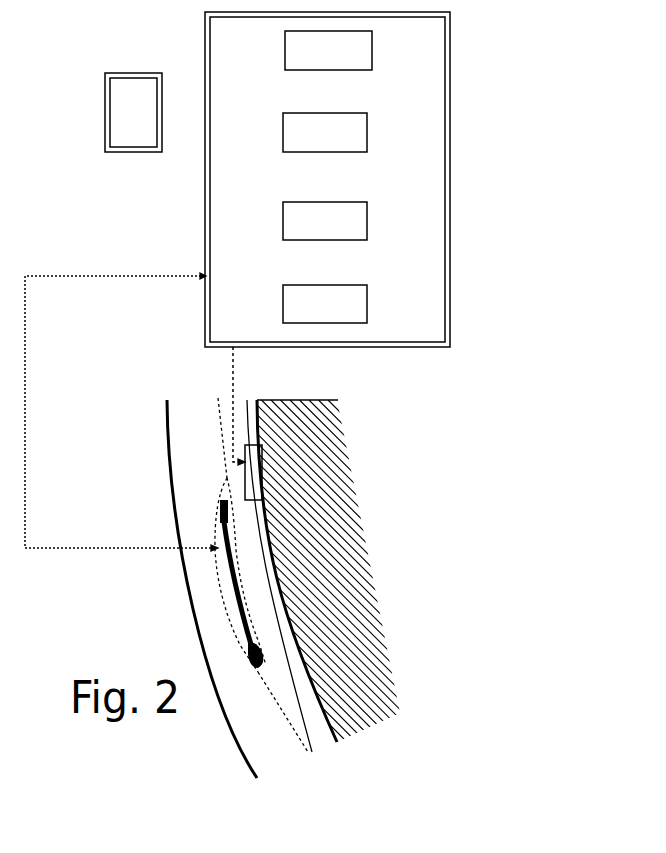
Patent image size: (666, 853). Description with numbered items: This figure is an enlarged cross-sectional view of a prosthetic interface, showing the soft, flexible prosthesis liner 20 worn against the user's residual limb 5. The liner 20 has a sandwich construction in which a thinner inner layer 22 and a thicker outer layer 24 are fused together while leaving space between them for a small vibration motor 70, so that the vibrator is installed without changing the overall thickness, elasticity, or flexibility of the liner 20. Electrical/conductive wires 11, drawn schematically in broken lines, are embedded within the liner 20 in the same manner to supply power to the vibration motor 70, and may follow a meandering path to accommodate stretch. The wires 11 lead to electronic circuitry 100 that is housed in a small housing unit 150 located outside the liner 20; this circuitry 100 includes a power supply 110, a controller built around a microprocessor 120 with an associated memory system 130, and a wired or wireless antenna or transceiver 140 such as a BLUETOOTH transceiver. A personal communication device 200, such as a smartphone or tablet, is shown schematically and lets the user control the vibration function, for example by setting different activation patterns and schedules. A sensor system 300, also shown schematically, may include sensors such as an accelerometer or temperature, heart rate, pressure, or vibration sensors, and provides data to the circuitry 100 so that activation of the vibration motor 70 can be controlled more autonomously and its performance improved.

The residual limb 5 is at (340, 546).
The electrical/conductive wires 11 is at (108, 276).
The prosthesis liner 20 is at (166, 427).
The inner layer 22 is at (315, 735).
The outer layer 24 is at (280, 747).
The vibration motor 70 is at (240, 594).
The electronic circuitry 100 is at (266, 186).
The power supply 110 is at (350, 63).
The microprocessor 120 is at (348, 145).
The memory system 130 is at (348, 233).
The antenna or transceiver 140 is at (349, 316).
The housing unit 150 is at (204, 40).
The personal communication device 200 is at (103, 102).
The sensor system 300 is at (263, 460).